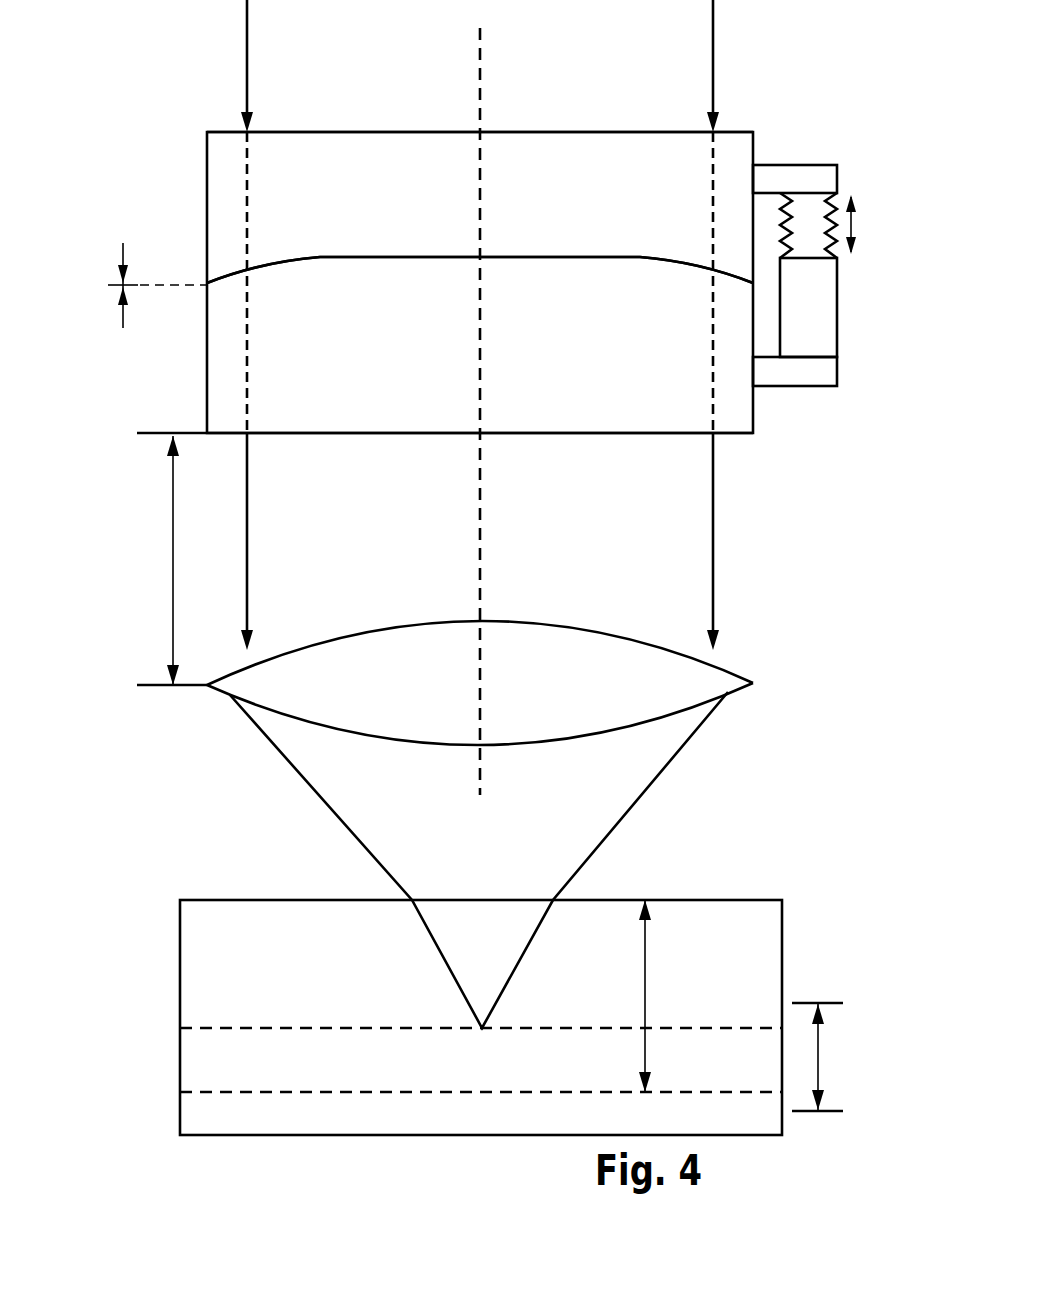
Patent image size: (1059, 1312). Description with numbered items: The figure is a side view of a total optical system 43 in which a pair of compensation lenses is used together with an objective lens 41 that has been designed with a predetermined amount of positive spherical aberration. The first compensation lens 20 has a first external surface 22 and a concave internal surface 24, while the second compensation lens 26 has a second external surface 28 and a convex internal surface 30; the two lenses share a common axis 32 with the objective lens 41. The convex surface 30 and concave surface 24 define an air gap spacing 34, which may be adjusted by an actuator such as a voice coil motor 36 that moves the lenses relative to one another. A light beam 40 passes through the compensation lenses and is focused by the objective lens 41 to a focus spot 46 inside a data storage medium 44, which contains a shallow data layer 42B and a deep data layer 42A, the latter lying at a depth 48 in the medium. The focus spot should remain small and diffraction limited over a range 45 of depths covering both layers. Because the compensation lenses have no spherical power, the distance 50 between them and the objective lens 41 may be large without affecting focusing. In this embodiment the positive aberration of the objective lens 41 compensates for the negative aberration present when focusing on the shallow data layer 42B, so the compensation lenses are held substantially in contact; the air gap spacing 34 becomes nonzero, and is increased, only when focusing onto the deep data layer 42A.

The first compensation lens 20 is at (682, 204).
The first external surface 22 is at (411, 131).
The concave internal surface 24 is at (293, 262).
The second compensation lens 26 is at (693, 377).
The second external surface 28 is at (402, 436).
The convex internal surface 30 is at (480, 285).
The common axis 32 is at (479, 87).
The air gap spacing 34 is at (123, 256).
The voice coil motor 36 is at (829, 321).
The light beam 40 is at (712, 62).
The objective lens 41 is at (640, 696).
The deep data layer 42A is at (378, 1091).
The shallow data layer 42B is at (378, 1027).
The total optical system 43 is at (126, 122).
The data storage medium 44 is at (180, 1017).
The range of depths 45 is at (820, 1058).
The focus spot 46 is at (483, 1027).
The depth 48 is at (645, 997).
The distance 50 is at (172, 573).